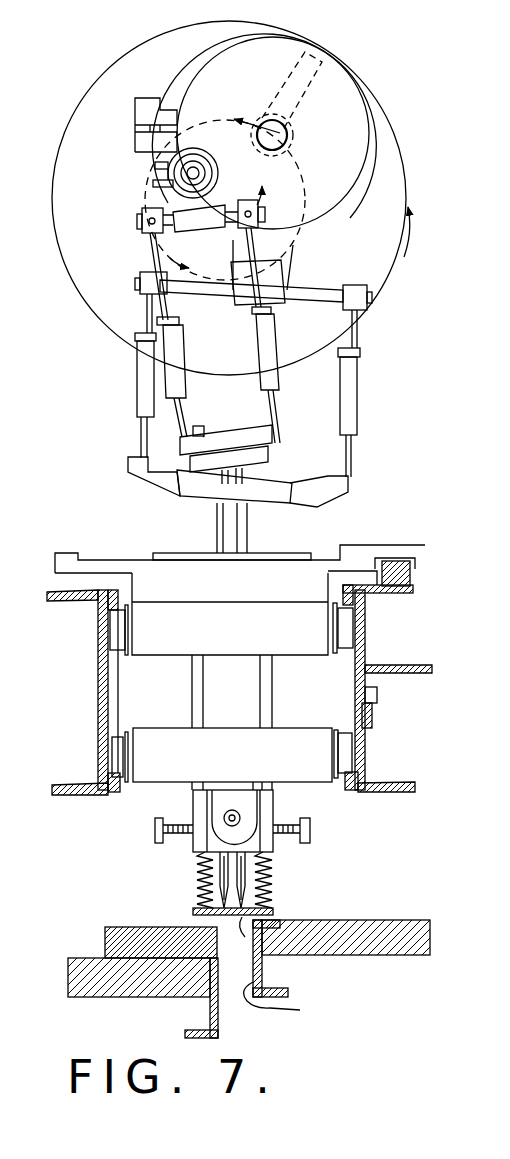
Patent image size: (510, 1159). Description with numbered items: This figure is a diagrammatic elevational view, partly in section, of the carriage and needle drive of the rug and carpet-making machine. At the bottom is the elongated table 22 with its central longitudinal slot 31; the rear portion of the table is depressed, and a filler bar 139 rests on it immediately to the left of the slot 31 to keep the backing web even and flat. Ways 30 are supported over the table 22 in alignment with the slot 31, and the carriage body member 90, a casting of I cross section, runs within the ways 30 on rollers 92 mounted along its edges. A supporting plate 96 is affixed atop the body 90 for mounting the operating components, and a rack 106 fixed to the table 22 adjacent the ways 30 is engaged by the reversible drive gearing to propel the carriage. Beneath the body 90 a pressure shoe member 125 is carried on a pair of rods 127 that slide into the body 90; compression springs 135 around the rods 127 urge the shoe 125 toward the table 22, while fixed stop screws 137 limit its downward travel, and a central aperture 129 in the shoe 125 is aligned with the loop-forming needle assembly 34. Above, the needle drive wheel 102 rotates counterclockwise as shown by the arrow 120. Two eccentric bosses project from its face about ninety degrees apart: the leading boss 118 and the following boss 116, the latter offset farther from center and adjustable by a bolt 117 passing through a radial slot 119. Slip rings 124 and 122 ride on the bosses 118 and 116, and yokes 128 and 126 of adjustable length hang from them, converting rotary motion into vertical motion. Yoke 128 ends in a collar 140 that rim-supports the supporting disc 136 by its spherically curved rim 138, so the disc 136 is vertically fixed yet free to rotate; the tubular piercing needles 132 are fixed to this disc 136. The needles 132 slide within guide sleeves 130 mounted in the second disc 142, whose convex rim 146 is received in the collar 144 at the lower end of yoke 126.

The needle drive wheel 102 is at (406, 150).
The slip ring 122 is at (369, 80).
The following boss 116 is at (352, 102).
The bolt 117 is at (290, 132).
The radial slot 119 is at (300, 72).
The leading boss 118 is at (177, 173).
The slip ring 124 is at (175, 155).
The arrow 120 is at (407, 238).
The yoke 128 is at (275, 380).
The yoke 126 is at (352, 392).
The collar 140 is at (273, 441).
The rim 138 is at (193, 431).
The supporting disc 136 is at (203, 427).
The tubular piercing needles 132 is at (217, 467).
The second disc 142 is at (270, 462).
The rim 146 is at (190, 502).
The collar 144 is at (187, 483).
The guide sleeves 130 is at (238, 527).
The loop-forming needle assembly 34 is at (257, 535).
The supporting plate 96 is at (368, 545).
The rack 106 is at (411, 580).
The body member 90 is at (217, 735).
The ways 30 is at (98, 694).
The rollers 92 is at (123, 652).
The stop screws 137 is at (311, 823).
The rods 127 is at (274, 871).
The compression springs 135 is at (268, 891).
The pressure shoe member 125 is at (274, 912).
The table 22 is at (381, 918).
The central aperture 129 is at (293, 944).
The filler bar 139 is at (157, 927).
The longitudinal slot 31 is at (284, 973).